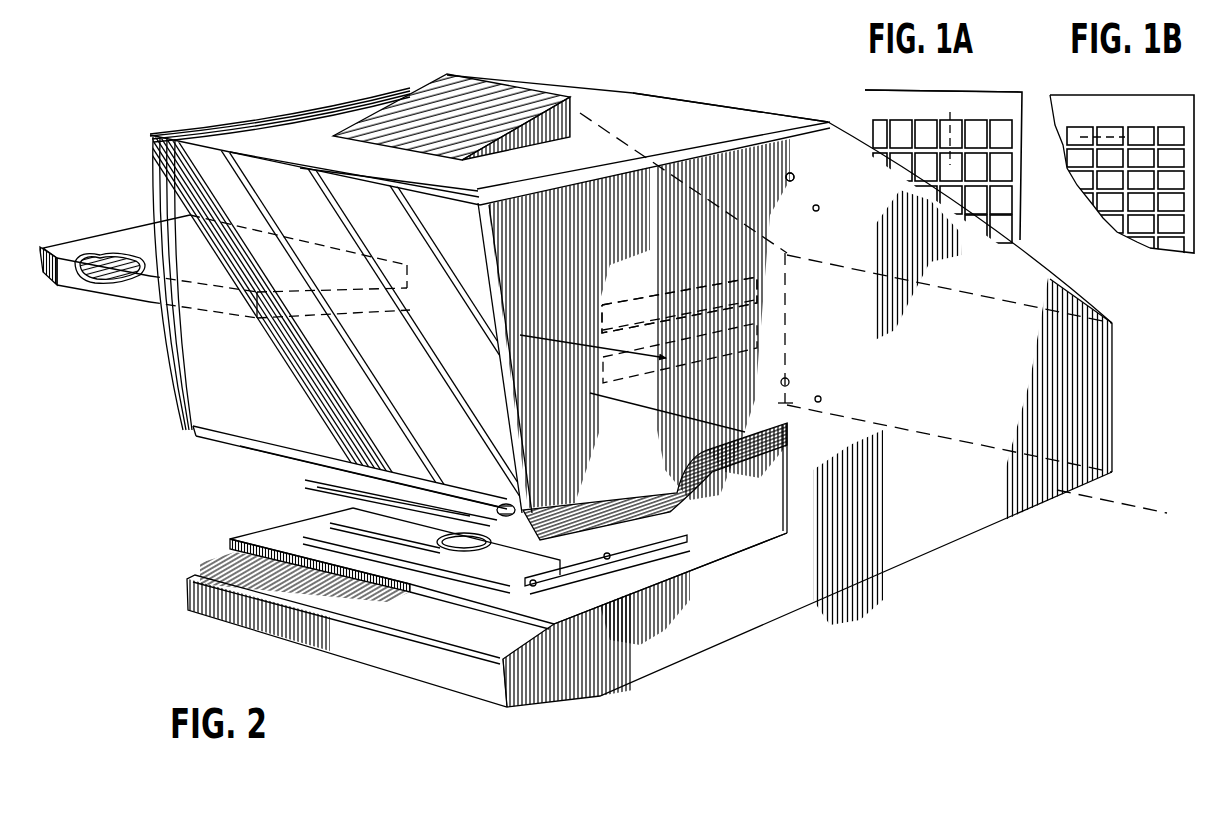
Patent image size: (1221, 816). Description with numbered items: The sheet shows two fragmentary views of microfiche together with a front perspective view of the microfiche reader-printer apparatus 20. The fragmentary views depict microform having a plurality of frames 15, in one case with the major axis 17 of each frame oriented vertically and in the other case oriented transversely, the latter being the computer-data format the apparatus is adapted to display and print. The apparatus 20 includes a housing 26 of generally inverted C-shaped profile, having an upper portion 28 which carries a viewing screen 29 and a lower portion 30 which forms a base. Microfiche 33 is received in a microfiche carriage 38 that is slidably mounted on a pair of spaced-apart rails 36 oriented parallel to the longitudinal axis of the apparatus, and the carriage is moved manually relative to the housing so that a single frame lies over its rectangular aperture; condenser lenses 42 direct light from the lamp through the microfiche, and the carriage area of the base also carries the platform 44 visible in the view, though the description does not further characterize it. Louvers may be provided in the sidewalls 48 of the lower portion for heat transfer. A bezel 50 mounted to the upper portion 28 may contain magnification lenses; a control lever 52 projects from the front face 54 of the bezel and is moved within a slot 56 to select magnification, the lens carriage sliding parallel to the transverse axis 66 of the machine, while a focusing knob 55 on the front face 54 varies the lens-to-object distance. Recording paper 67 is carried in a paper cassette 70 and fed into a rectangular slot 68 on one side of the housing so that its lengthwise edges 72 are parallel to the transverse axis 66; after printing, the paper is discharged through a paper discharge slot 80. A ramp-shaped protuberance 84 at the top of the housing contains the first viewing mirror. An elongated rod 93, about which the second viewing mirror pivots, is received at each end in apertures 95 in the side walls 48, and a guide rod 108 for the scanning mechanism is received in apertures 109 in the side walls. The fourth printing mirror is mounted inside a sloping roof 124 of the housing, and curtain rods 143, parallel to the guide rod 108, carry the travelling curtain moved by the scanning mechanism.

In FIG. 1A, the frames 15 is at (923, 123).
In FIG. 1B, the frames 15 is at (1112, 130).
In FIG. 1A, the major axis 17 is at (950, 110).
In FIG. 1B, the major axis 17 is at (1100, 128).
In FIG. 2, the reader-printer apparatus 20 is at (277, 94).
In FIG. 2, the housing 26 is at (648, 686).
In FIG. 2, the upper portion 28 is at (710, 170).
In FIG. 2, the viewing screen 29 is at (197, 165).
In FIG. 2, the lower portion 30 is at (548, 708).
In FIG. 2, the microfiche 33 is at (863, 120).
In FIG. 1B, the microfiche 33 is at (1133, 242).
In FIG. 2, the rails 36 is at (613, 556).
In FIG. 2, the microfiche carriage 38 is at (455, 548).
In FIG. 2, the lenses 42 is at (453, 562).
In FIG. 2, the platform 44 is at (272, 533).
In FIG. 2, the sidewalls 48 is at (314, 111).
In FIG. 2, the bezel 50 is at (660, 500).
In FIG. 2, the control lever 52 is at (308, 485).
In FIG. 2, the front face 54 is at (330, 498).
In FIG. 2, the focusing knob 55 is at (500, 504).
In FIG. 2, the slot 56 is at (440, 478).
In FIG. 2, the transverse axis 66 is at (1145, 505).
In FIG. 2, the recording paper 67 is at (100, 254).
In FIG. 2, the rectangular slot 68 is at (626, 382).
In FIG. 2, the paper cassette 70 is at (117, 311).
In FIG. 2, the lengthwise edges 72 is at (108, 282).
In FIG. 2, the paper discharge slot 80 is at (655, 300).
In FIG. 2, the ramp-shaped protuberance 84 is at (428, 103).
In FIG. 2, the elongated rod 93 is at (788, 182).
In FIG. 2, the apertures 95 is at (786, 178).
In FIG. 2, the guide rod 108 is at (790, 378).
In FIG. 2, the apertures 109 is at (778, 403).
In FIG. 2, the sloping roof 124 is at (1100, 318).
In FIG. 2, the curtain rods 143 is at (814, 211).